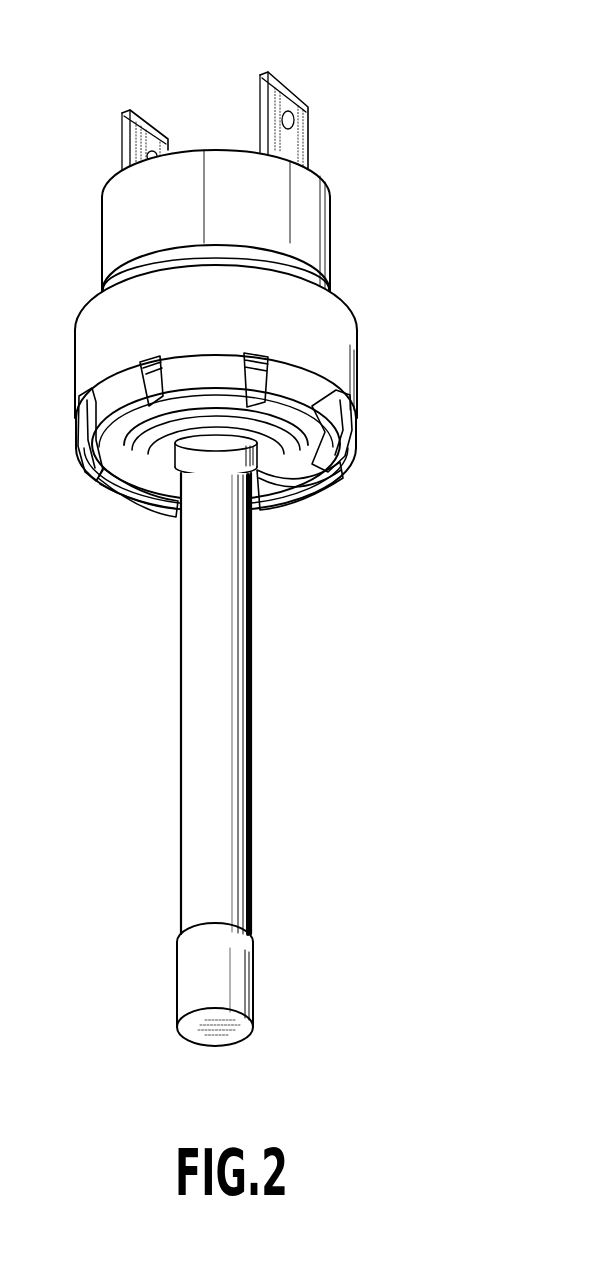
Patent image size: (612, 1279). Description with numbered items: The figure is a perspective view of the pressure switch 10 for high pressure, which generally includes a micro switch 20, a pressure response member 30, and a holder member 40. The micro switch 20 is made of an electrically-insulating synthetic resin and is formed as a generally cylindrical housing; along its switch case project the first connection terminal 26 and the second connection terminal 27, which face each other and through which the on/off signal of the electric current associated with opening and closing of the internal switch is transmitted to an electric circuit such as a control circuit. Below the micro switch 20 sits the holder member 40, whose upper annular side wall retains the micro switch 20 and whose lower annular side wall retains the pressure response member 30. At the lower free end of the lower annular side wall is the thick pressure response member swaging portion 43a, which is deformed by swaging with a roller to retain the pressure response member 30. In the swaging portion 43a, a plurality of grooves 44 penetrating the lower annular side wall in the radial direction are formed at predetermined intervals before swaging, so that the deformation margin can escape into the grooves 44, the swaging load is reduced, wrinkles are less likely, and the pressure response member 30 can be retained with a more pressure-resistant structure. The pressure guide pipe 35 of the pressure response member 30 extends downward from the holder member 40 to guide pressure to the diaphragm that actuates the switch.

The pressure switch 10 is at (413, 66).
The micro switch 20 is at (334, 240).
The first connection terminal 26 is at (155, 128).
The second connection terminal 27 is at (293, 90).
The pressure response member 30 is at (125, 505).
The pressure guide pipe 35 is at (220, 698).
The holder member 40 is at (362, 372).
The pressure response member swaging portion 43a is at (343, 446).
The groove 44 is at (332, 412).